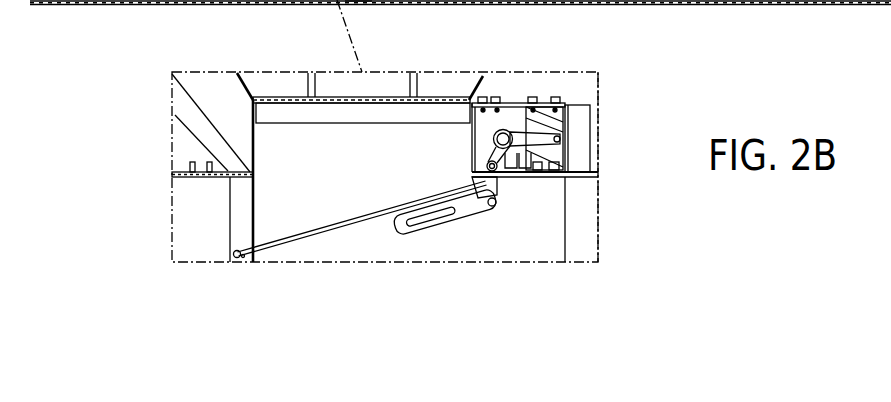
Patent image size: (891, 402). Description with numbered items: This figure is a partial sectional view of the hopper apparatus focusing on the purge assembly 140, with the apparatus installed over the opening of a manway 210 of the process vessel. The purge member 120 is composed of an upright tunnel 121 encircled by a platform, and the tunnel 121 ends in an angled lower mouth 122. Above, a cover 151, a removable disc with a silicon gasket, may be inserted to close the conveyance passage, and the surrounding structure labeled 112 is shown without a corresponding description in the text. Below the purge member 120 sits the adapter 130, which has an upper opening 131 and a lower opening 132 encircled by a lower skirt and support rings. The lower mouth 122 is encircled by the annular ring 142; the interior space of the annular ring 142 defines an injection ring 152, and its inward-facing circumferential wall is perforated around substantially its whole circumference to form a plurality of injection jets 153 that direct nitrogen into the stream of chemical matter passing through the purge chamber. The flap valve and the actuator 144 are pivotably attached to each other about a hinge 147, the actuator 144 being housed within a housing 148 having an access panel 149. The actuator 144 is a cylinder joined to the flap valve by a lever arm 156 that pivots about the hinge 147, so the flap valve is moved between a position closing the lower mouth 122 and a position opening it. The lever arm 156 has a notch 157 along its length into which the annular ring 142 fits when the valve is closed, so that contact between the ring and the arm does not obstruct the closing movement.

The cover body 112 is at (308, 123).
The purge member 120 is at (208, 208).
The upright tunnel 121 is at (280, 212).
The lower mouth 122 is at (370, 220).
The adapter 130 is at (565, 202).
The upper opening 131 is at (468, 172).
The lower opening 132 is at (359, 2).
The purge assembly 140 is at (598, 73).
The annular ring 142 is at (283, 250).
The actuator 144 is at (540, 115).
The hinge 147 is at (487, 162).
The housing 148 is at (592, 130).
The access panel 149 is at (505, 100).
The cover 151 is at (280, 97).
The injection ring 152 is at (234, 256).
The injection jets 153 is at (246, 258).
The lever arm 156 is at (487, 213).
The notch 157 is at (498, 193).
The manway 210 is at (390, 2).